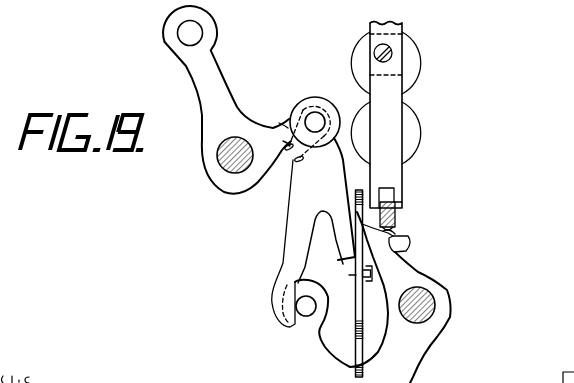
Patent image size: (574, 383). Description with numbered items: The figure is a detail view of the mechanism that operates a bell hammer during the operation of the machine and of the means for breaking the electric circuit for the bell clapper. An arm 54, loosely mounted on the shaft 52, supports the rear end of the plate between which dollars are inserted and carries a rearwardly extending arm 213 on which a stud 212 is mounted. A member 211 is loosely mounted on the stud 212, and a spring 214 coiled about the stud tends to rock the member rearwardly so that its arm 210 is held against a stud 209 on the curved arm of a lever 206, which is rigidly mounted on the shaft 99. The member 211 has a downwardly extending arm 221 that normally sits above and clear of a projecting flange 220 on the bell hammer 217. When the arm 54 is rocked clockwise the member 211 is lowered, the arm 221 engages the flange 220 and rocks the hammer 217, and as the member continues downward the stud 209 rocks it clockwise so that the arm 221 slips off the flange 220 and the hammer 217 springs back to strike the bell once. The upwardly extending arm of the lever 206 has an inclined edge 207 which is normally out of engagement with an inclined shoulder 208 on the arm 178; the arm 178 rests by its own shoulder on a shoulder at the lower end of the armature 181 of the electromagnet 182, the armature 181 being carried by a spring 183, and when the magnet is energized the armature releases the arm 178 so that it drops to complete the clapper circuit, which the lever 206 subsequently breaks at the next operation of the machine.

The shaft 52 is at (233, 157).
The arm 54 is at (203, 98).
The shaft 99 is at (433, 303).
The arm 178 is at (397, 222).
The armature 181 is at (390, 125).
The electromagnet 182 is at (418, 59).
The spring 183 is at (402, 24).
The lever 206 is at (446, 288).
The inclined edge 207 is at (398, 247).
The inclined shoulder 208 is at (393, 229).
The stud 209 is at (306, 310).
The arm 210 is at (282, 295).
The member 211 is at (303, 213).
The stud 212 is at (317, 115).
The rearwardly extending arm 213 is at (273, 129).
The spring 214 is at (293, 160).
The bell hammer 217 is at (364, 368).
The projecting flange 220 is at (372, 278).
The downwardly extending arm 221 is at (344, 250).